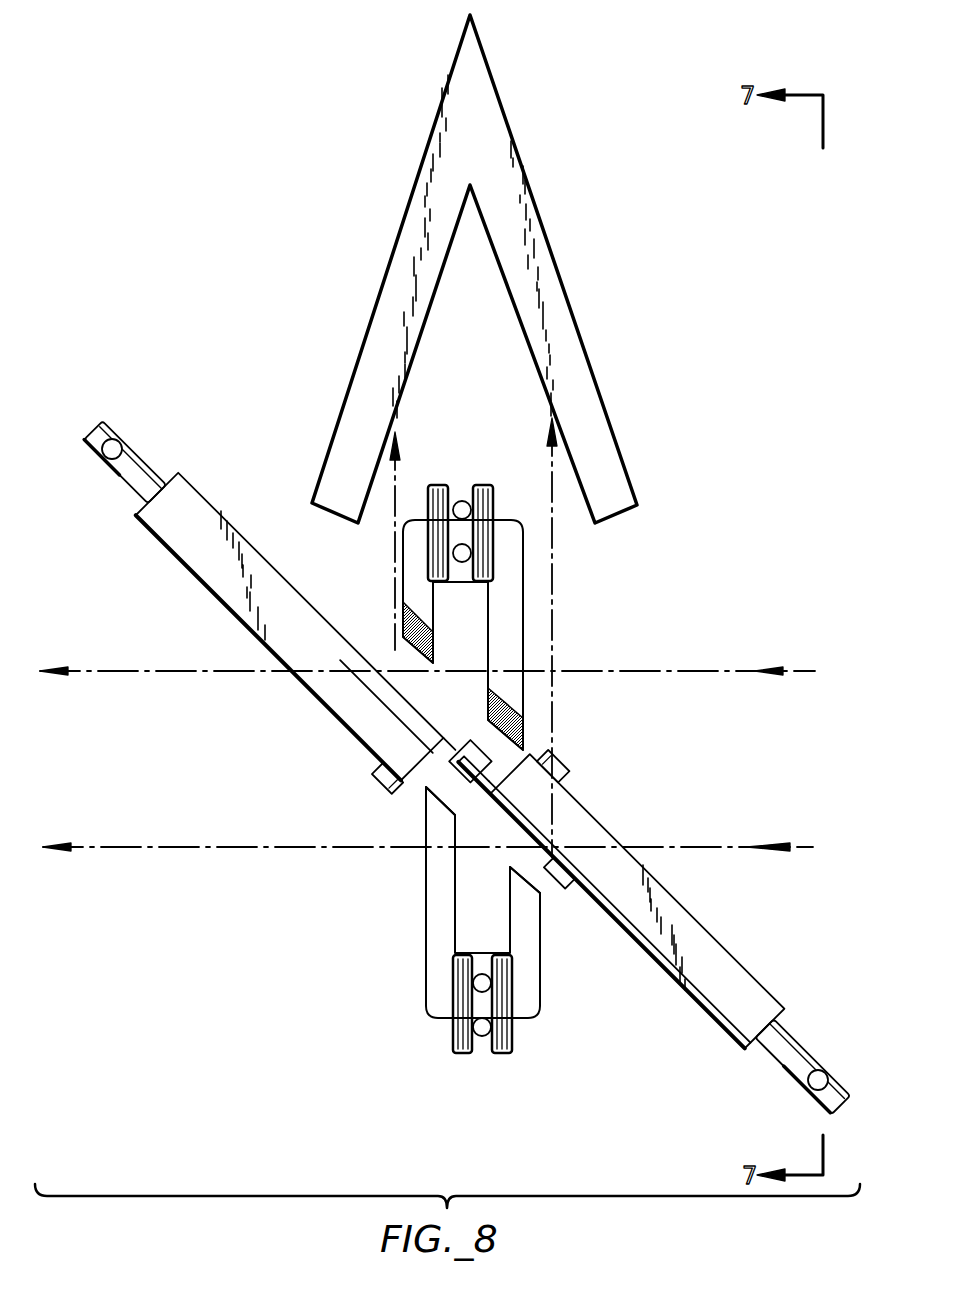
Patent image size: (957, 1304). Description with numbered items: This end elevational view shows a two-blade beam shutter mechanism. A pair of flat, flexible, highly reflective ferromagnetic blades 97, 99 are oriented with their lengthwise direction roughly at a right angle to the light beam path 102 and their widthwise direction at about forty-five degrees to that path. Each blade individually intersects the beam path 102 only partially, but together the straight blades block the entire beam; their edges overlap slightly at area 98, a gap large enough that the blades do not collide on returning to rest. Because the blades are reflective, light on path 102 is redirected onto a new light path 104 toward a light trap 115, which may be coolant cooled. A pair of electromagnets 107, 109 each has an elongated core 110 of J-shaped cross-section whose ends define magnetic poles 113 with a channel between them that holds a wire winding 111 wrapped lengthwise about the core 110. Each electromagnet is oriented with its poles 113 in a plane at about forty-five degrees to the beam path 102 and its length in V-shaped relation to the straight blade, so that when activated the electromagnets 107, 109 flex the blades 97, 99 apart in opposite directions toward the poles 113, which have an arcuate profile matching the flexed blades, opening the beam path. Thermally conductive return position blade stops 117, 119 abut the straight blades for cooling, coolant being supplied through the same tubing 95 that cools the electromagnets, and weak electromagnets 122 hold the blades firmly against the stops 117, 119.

The tubing 95 is at (463, 500).
The blade 97 is at (476, 742).
The overlap area 98 is at (445, 768).
The blade 99 is at (513, 832).
The beam path 102 is at (214, 668).
The new light path 104 is at (399, 480).
The electromagnet 107 is at (532, 602).
The electromagnet 109 is at (414, 902).
The core 110 is at (513, 562).
The wire winding 111 is at (495, 506).
The magnetic poles 113 is at (412, 622).
The light trap 115 is at (376, 246).
The return position blade stop 117 is at (218, 598).
The return position blade stop 119 is at (652, 882).
The weak electromagnet 122 is at (368, 772).